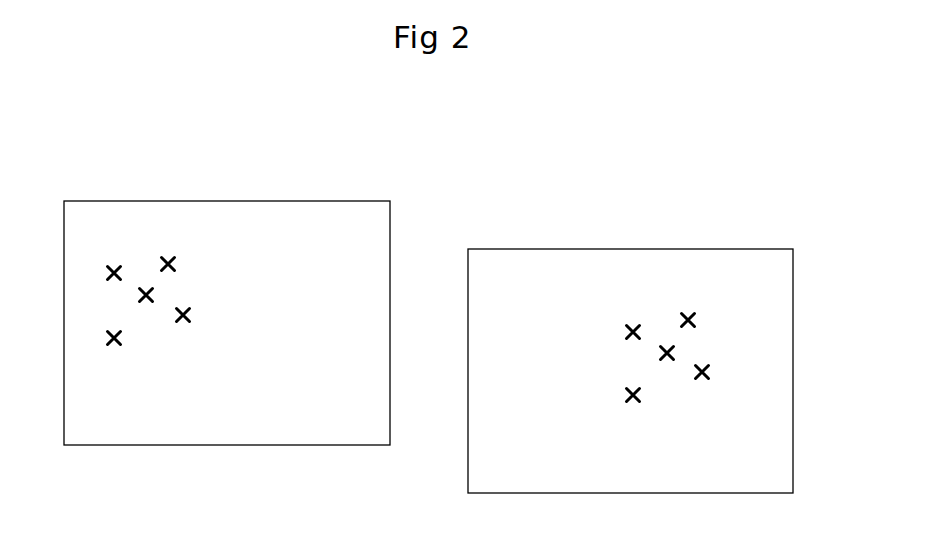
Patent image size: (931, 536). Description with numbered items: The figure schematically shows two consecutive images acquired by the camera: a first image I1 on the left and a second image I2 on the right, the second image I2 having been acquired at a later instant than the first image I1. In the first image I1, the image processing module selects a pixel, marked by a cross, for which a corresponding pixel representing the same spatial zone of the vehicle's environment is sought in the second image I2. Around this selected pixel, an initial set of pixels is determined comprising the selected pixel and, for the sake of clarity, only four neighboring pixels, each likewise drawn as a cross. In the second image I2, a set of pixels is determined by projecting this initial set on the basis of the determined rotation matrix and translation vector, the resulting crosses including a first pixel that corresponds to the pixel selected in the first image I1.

The first image I1 is at (222, 201).
The second image I2 is at (630, 249).